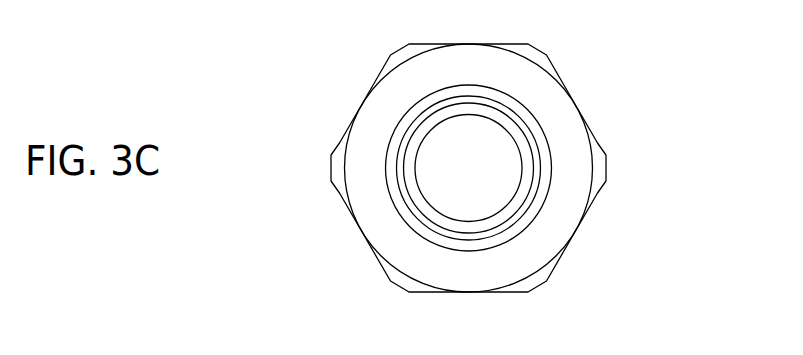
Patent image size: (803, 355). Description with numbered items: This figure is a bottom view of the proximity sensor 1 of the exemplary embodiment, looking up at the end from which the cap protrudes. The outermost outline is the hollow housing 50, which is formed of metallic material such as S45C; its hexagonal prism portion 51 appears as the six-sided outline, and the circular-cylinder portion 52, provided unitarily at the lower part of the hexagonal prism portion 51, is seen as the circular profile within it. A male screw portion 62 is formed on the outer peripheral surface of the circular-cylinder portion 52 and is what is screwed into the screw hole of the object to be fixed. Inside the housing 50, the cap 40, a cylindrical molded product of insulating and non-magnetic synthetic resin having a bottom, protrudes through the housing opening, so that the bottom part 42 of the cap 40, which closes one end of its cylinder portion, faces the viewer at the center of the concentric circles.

The proximity sensor 1 is at (670, 80).
The housing 50 is at (598, 190).
The hexagonal prism portion 51 is at (533, 53).
The circular-cylinder portion 52 is at (522, 118).
The cap 40 is at (527, 145).
The bottom part 42 is at (502, 193).
The male screw portion 62 is at (392, 136).